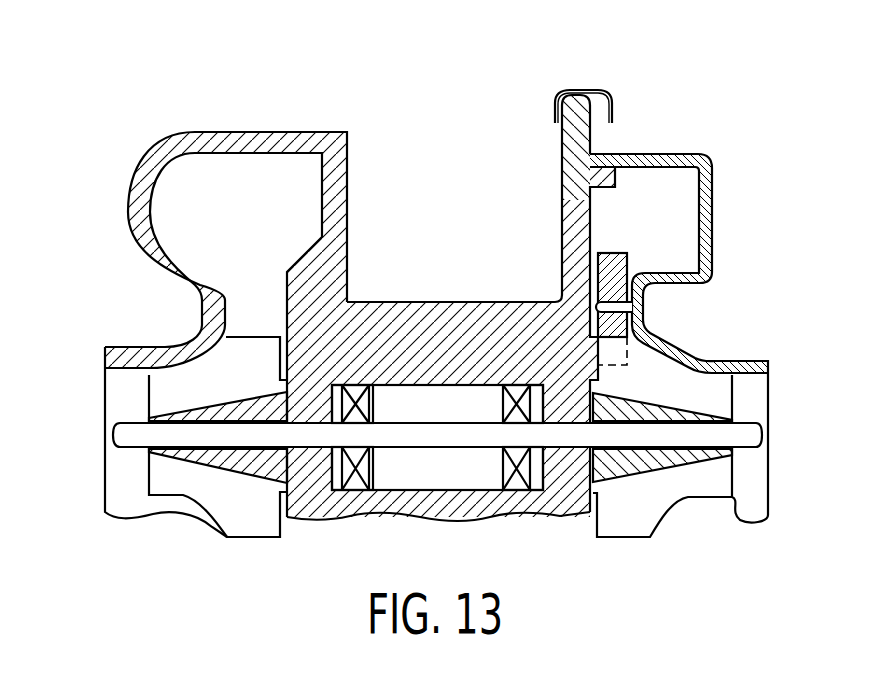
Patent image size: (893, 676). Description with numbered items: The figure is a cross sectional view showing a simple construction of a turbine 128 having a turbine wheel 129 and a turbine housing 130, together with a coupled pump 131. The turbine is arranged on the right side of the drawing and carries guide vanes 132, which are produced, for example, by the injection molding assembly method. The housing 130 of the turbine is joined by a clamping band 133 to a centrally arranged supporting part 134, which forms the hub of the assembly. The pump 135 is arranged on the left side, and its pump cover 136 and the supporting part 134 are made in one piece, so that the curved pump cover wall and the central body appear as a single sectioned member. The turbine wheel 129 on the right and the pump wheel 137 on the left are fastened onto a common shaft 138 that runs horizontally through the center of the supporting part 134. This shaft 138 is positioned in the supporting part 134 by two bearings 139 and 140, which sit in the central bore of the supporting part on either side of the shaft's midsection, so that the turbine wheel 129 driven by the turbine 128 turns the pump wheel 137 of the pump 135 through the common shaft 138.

The turbine 128 is at (740, 338).
The turbine wheel 129 is at (685, 496).
The turbine housing 130 is at (657, 157).
The coupled pump 131 is at (724, 136).
The guide vanes 132 is at (628, 263).
The clamping band 133 is at (602, 93).
The supporting part 134 is at (448, 305).
The pump 135 is at (134, 148).
The pump cover 136 is at (143, 247).
The pump wheel 137 is at (183, 494).
The shaft 138 is at (455, 447).
The bearing 139 is at (352, 487).
The bearing 140 is at (516, 484).